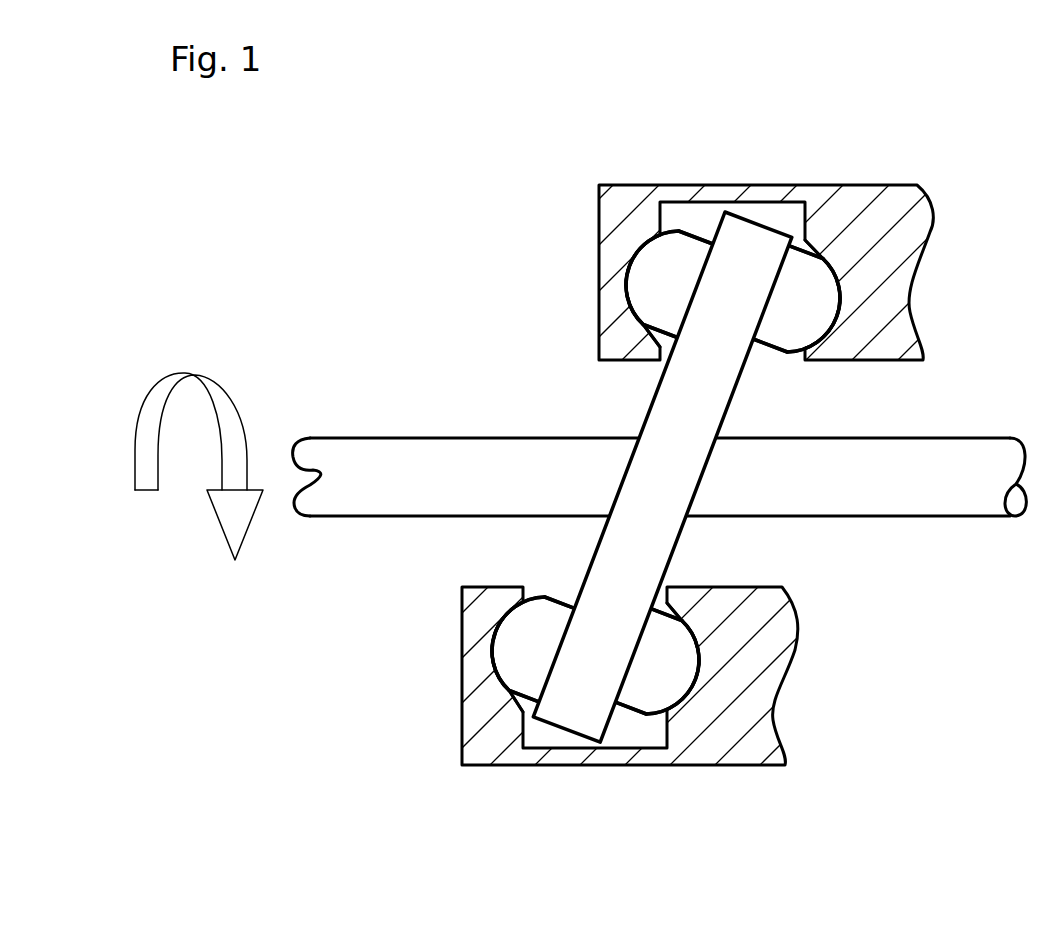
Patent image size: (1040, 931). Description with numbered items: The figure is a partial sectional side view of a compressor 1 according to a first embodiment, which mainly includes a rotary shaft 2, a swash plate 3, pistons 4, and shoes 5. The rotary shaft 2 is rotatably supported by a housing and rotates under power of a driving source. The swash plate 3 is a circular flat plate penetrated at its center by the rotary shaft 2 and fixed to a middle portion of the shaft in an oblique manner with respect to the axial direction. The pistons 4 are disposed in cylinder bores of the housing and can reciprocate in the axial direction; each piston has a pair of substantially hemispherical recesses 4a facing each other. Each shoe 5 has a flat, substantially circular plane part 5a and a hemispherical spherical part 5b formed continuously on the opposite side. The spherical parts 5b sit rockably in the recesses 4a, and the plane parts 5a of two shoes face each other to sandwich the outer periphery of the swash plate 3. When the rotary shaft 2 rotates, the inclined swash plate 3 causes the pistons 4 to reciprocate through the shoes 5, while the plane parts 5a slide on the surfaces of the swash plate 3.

The compressor 1 is at (199, 341).
The rotary shaft 2 is at (410, 447).
The swash plate 3 is at (655, 415).
The piston 4 is at (863, 197).
The recess 4a is at (645, 295).
The shoe 5 is at (687, 243).
The plane part 5a is at (698, 293).
The spherical part 5b is at (653, 250).